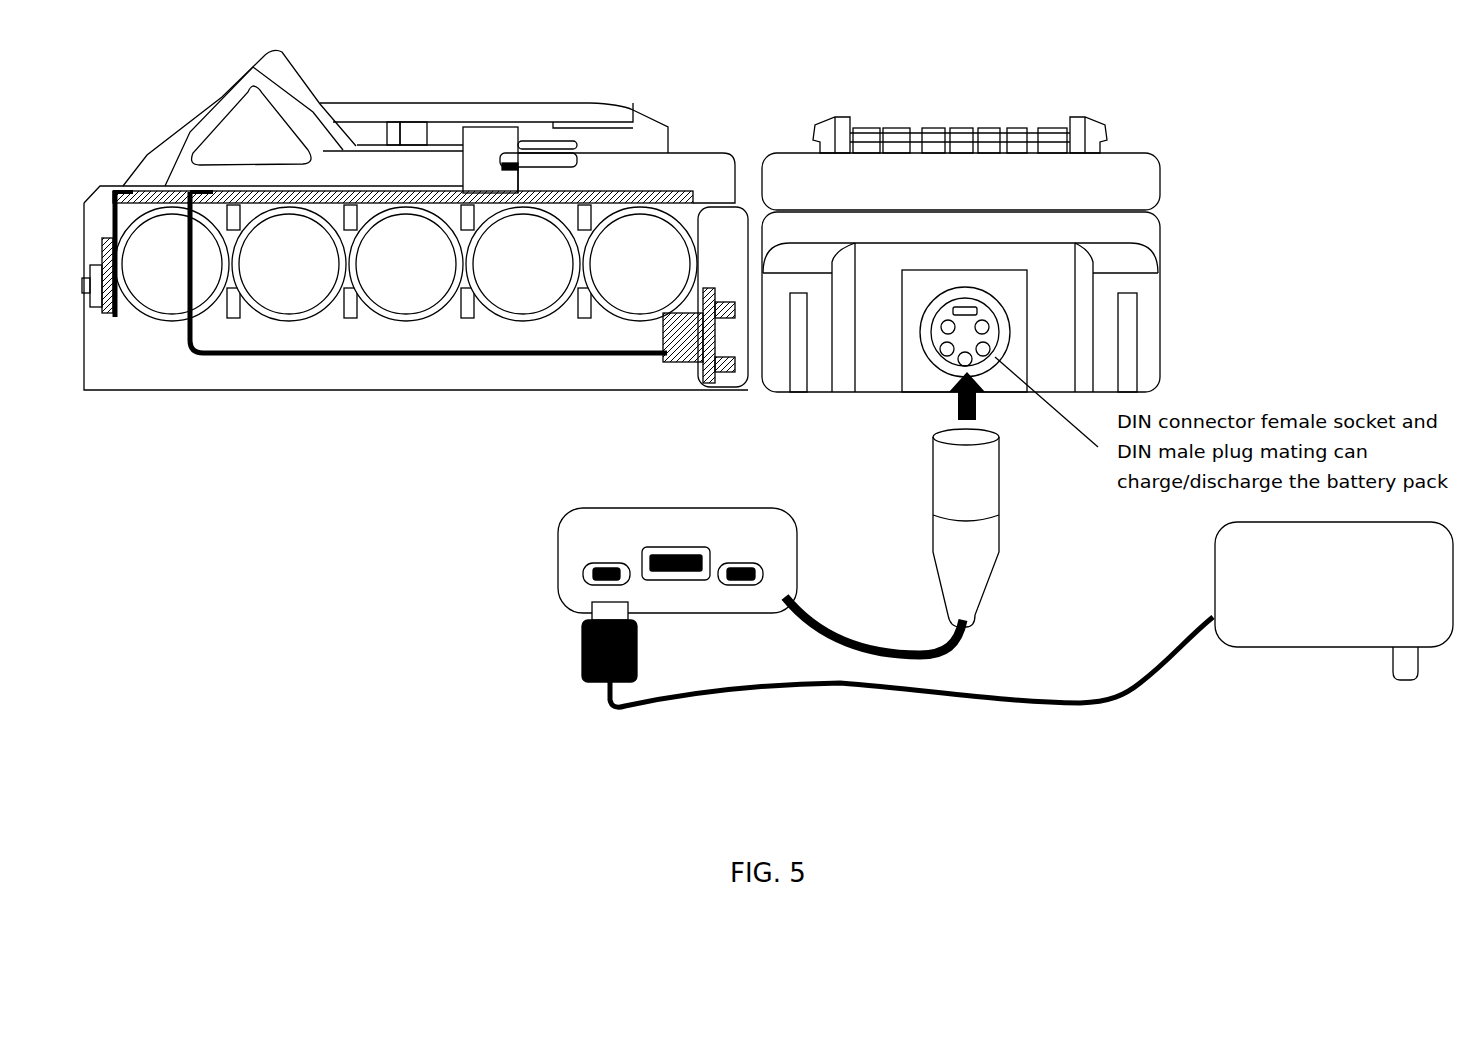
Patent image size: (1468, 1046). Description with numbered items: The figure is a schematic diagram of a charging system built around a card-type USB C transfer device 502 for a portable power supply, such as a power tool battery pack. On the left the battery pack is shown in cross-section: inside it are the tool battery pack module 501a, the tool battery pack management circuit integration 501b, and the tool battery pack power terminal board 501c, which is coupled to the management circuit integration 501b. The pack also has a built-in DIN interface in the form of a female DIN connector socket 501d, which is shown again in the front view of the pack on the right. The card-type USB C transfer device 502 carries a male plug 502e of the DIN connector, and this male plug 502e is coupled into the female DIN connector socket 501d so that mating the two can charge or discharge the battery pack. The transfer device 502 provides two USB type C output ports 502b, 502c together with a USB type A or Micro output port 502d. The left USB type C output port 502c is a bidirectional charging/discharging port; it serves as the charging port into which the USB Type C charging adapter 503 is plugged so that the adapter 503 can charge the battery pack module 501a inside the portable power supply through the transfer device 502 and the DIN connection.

The tool battery pack module 501a is at (612, 273).
The tool battery pack management circuit integration (PCBA) 501b is at (659, 189).
The tool battery pack power terminal board 501c is at (502, 141).
The female DIN connector socket 501d is at (922, 366).
The card-type USB C transfer device 502 is at (819, 568).
The USB type C output port 502b is at (760, 563).
The USB type C output port 502c is at (588, 569).
The USB type A or Micro output port 502d is at (679, 583).
The male plug of the DIN connector 502e is at (974, 488).
The USB Type C charging adapter 503 is at (1290, 649).